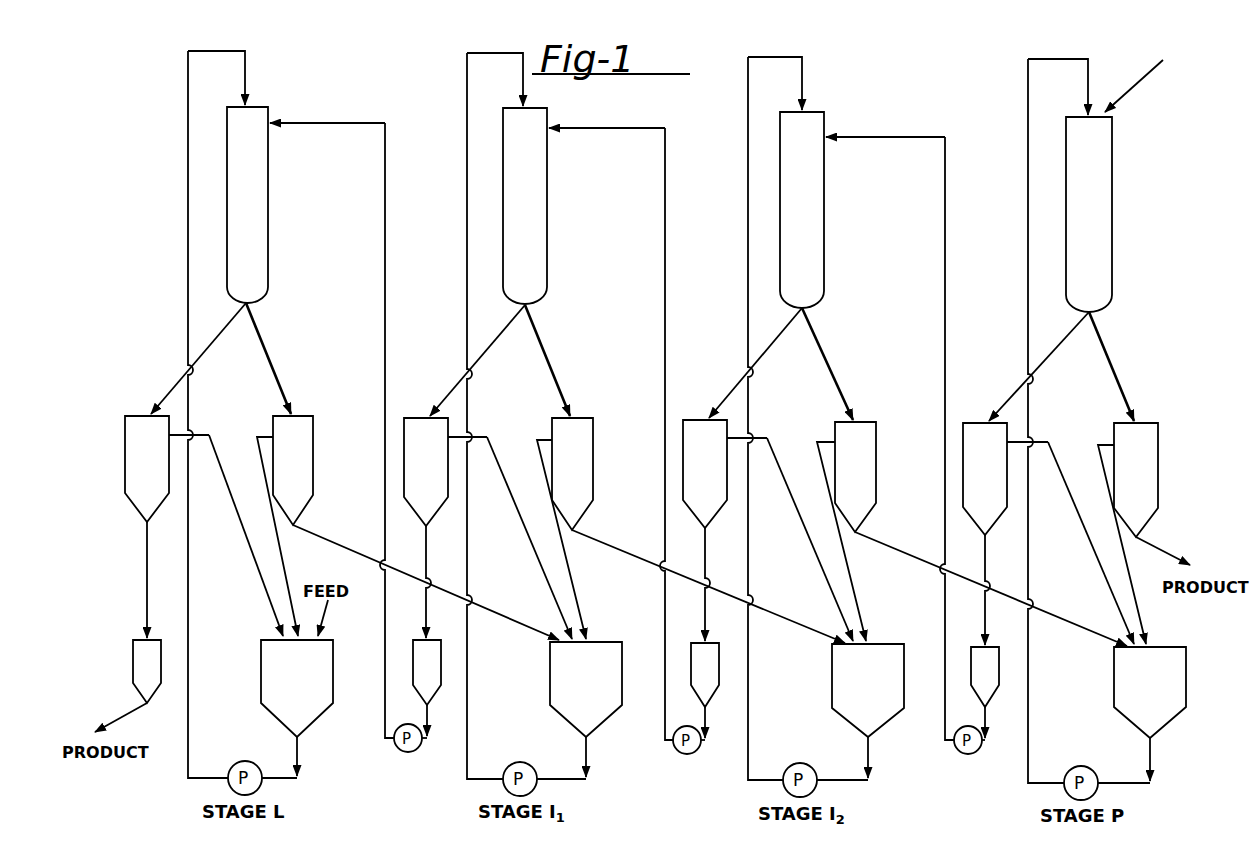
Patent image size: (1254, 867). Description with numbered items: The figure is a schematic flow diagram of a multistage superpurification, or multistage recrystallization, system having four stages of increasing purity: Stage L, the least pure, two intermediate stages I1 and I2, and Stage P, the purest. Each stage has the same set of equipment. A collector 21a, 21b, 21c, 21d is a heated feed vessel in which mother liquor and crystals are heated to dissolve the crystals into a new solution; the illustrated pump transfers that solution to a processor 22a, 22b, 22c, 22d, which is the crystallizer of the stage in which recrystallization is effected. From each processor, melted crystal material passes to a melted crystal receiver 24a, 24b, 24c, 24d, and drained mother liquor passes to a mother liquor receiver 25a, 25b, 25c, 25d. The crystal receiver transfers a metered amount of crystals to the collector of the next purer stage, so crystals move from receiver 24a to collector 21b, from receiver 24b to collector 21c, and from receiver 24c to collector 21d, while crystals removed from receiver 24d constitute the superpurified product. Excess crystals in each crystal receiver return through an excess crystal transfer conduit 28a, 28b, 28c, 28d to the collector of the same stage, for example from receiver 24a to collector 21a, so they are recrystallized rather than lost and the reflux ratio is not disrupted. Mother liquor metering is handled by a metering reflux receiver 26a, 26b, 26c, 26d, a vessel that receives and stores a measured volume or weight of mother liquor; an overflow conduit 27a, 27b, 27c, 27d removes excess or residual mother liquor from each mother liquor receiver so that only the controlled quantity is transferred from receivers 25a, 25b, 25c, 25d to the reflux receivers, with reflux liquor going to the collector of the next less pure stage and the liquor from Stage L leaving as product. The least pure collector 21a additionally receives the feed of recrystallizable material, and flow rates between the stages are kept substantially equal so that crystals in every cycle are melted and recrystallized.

The collector 21a is at (308, 687).
The collector 21b is at (597, 689).
The collector 21c is at (879, 692).
The collector 21d is at (1159, 694).
The processor 22a is at (261, 225).
The processor 22b is at (540, 227).
The processor 22c is at (817, 229).
The processor 22d is at (1104, 235).
The melted crystal receiver 24a is at (308, 474).
The melted crystal receiver 24b is at (587, 476).
The melted crystal receiver 24c is at (870, 480).
The melted crystal receiver 24d is at (1149, 482).
The mother liquor receiver 25a is at (160, 474).
The mother liquor receiver 25b is at (439, 476).
The mother liquor receiver 25c is at (718, 480).
The mother liquor receiver 25d is at (998, 482).
The metering reflux receiver 26a is at (148, 663).
The metering reflux receiver 26b is at (420, 658).
The metering reflux receiver 26c is at (700, 668).
The metering reflux receiver 26d is at (990, 665).
The overflow conduit 27a is at (209, 435).
The overflow conduit 27b is at (487, 437).
The overflow conduit 27c is at (767, 438).
The overflow conduit 27d is at (1048, 442).
The excess crystal transfer conduit 28a is at (260, 451).
The excess crystal transfer conduit 28b is at (540, 452).
The excess crystal transfer conduit 28c is at (821, 453).
The excess crystal transfer conduit 28d is at (1102, 456).